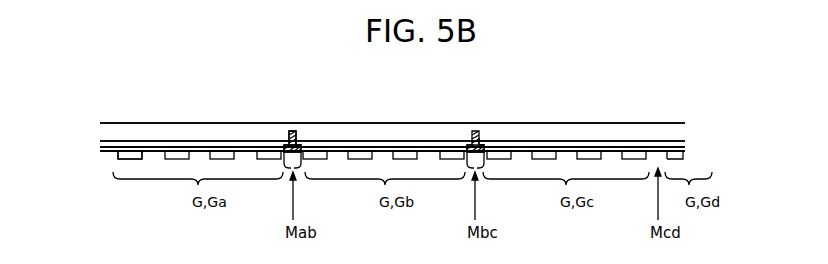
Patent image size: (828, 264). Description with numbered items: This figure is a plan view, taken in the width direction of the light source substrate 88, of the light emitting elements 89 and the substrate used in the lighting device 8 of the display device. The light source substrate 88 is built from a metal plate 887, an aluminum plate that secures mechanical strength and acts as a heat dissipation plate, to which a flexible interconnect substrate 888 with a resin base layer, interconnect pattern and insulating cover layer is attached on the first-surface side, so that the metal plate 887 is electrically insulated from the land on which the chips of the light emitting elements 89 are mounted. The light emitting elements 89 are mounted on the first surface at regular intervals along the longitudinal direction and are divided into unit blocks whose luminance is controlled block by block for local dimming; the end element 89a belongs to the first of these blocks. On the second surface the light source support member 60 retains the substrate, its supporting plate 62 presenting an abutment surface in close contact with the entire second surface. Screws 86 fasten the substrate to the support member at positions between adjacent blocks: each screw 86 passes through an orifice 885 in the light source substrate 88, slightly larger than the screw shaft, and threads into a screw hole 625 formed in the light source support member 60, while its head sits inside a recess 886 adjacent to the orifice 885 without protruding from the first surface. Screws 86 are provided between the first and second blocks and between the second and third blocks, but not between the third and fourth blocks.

The lighting device 8 is at (93, 112).
The end wiring pad 89a is at (127, 159).
The light emitting elements 89 is at (225, 156).
The screw hole 625 is at (289, 134).
The screws 86 is at (292, 131).
The orifice 885 is at (299, 147).
The recess 886 is at (302, 151).
The light source support member 60 is at (570, 127).
The supporting plate 62 is at (392, 100).
The light source substrate 88 is at (664, 66).
The flexible interconnect substrate 888 is at (583, 150).
The metal plate 887 is at (603, 148).